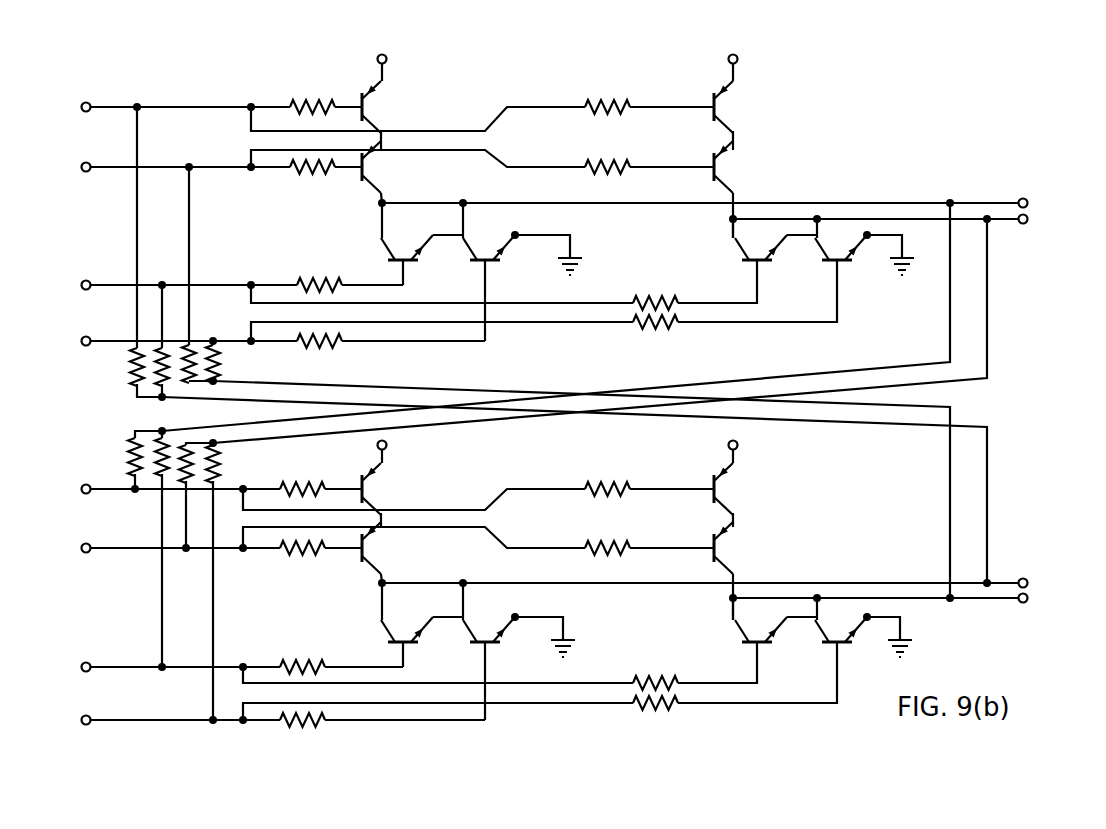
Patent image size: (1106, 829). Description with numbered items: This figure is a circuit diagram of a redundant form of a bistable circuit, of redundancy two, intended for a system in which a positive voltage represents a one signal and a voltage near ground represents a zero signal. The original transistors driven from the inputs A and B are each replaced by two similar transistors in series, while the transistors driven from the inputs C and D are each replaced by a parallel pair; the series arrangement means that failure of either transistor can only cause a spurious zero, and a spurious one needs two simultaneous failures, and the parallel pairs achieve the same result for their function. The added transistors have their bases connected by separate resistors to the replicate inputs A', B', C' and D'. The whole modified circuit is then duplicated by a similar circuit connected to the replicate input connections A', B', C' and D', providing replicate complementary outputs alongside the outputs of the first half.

The input connection A is at (209, 109).
The replicate input A' is at (209, 169).
The input connection B is at (209, 492).
The replicate input B' is at (209, 551).
The input connection C is at (230, 669).
The replicate input C' is at (271, 722).
The input connection D is at (229, 288).
The replicate input D' is at (270, 344).